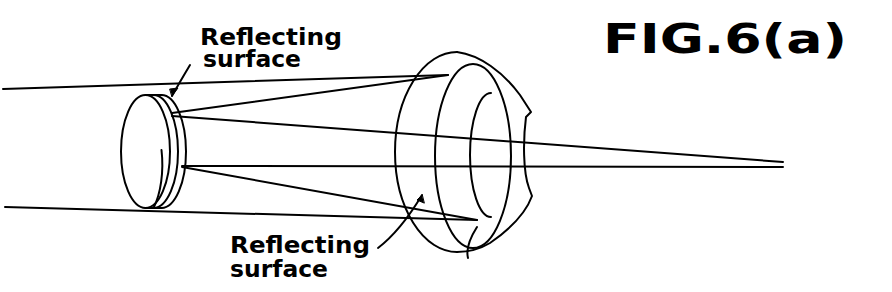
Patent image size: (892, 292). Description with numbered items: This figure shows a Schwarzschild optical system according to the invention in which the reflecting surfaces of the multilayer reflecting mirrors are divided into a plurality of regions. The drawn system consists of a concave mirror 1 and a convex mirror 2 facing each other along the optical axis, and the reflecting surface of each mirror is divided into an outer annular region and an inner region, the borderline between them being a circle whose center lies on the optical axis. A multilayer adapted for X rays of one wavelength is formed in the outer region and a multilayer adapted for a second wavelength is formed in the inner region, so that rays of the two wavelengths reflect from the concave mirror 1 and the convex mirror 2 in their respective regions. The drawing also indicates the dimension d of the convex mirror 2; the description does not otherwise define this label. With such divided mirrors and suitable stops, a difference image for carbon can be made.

The concave mirror 1 is at (458, 168).
The convex mirror 2 is at (158, 179).
The thickness of disc element d is at (168, 205).